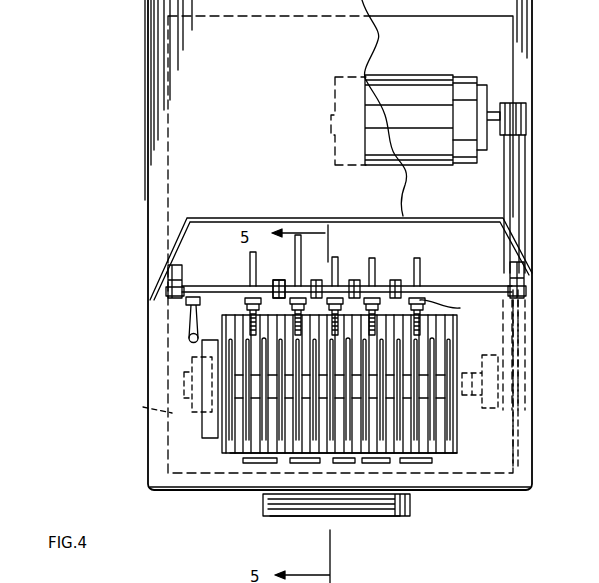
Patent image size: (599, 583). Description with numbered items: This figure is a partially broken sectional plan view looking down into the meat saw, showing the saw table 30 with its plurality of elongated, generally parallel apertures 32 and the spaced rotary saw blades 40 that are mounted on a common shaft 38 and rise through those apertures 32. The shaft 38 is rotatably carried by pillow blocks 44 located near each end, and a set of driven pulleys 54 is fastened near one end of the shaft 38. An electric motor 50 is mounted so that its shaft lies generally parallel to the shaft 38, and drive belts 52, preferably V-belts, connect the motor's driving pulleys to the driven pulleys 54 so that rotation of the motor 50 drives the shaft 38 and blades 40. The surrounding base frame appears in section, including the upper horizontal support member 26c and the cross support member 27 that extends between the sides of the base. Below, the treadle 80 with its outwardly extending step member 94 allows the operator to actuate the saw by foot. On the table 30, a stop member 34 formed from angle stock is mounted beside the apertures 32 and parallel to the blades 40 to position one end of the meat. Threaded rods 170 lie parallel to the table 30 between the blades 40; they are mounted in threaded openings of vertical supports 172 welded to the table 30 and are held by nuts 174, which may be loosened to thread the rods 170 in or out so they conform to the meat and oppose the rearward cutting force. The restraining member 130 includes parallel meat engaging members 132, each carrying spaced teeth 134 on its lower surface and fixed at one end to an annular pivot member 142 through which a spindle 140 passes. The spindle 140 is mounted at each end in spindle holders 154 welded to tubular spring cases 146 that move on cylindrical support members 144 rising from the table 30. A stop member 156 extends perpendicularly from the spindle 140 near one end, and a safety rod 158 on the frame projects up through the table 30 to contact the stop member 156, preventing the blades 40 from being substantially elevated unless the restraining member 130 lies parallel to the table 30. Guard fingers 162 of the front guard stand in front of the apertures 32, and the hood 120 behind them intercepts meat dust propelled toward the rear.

The upper horizontal support member 26c is at (147, 60).
The cross support member 27 is at (492, 494).
The saw table 30 is at (532, 473).
The apertures 32 is at (253, 453).
The stop member 34 is at (207, 428).
The shaft 38 is at (180, 390).
The rotary saw blades 40 is at (253, 440).
The pillow blocks 44 is at (545, 428).
The electric motor 50 is at (418, 90).
The drive belts 52 is at (524, 178).
The driven pulleys 54 is at (525, 392).
The treadle 80 is at (410, 500).
The step member 94 is at (378, 516).
The hood 120 is at (518, 242).
The restraining member 130 is at (335, 282).
The meat engaging members 132 is at (280, 282).
The teeth 134 is at (257, 298).
The spindle 140 is at (490, 290).
The pivot member 142 is at (275, 283).
The support members 144 is at (172, 252).
The spring case 146 is at (170, 275).
The spindle holders 154 is at (167, 294).
The stop member 156 is at (186, 312).
The safety rod 158 is at (188, 340).
The guard fingers 162 is at (405, 464).
The rods 170 is at (303, 254).
The supports 172 is at (445, 308).
The nuts 174 is at (385, 308).